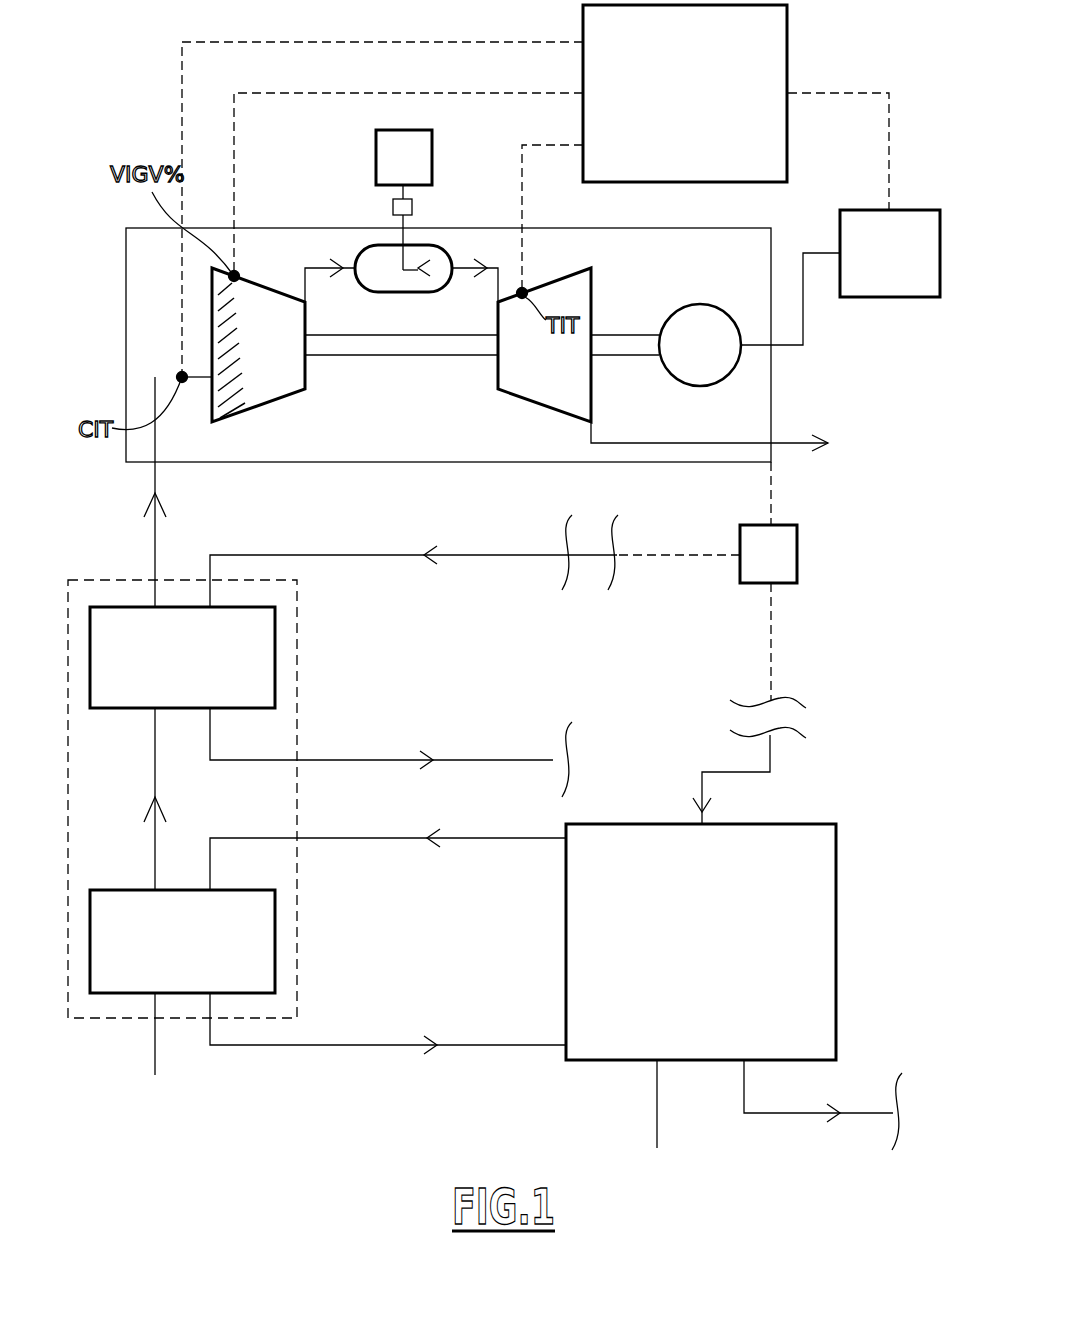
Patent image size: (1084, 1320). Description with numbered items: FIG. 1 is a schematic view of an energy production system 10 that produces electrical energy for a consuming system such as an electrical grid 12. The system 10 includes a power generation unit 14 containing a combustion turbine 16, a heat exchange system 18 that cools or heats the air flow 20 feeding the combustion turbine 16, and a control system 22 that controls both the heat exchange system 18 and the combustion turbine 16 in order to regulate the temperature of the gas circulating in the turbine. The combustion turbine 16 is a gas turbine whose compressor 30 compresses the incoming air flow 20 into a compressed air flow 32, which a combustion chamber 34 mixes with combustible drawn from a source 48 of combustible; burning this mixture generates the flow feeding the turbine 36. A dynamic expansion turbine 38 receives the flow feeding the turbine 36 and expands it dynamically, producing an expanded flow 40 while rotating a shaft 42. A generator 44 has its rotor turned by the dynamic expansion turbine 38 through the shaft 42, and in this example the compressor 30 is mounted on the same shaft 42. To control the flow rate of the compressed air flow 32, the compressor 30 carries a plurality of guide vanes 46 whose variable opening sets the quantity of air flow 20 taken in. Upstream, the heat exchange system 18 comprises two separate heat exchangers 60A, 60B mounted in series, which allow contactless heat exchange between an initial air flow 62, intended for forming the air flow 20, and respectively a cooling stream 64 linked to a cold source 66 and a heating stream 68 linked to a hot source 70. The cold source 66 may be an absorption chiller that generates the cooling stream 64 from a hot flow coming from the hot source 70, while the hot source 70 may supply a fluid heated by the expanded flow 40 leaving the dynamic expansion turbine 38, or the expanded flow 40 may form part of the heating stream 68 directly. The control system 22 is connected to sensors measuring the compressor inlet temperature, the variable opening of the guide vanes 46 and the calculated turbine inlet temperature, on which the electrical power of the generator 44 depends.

The energy production system 10 is at (183, 1137).
The electrical grid 12 is at (877, 269).
The power generation unit 14 is at (117, 360).
The combustion turbine 16 is at (158, 290).
The heat exchange system 18 is at (297, 663).
The air flow 20 is at (154, 540).
The control system 22 is at (672, 110).
The compressor 30 is at (393, 207).
The compressed air flow 32 is at (303, 277).
The combustion chamber 34 is at (405, 292).
The flow feeding the turbine 36 is at (505, 285).
The dynamic expansion turbine 38 is at (593, 278).
The expanded flow 40 is at (623, 462).
The shaft 42 is at (398, 348).
The generator 44 is at (722, 368).
The guide vanes 46 is at (228, 420).
The source of combustible 48 is at (391, 174).
The heat exchanger 60A is at (162, 671).
The heat exchanger 60B is at (162, 955).
The initial air flow 62 is at (154, 1062).
The cooling stream 64 is at (385, 840).
The cold source 66 is at (688, 958).
The heating stream 68 is at (497, 558).
The hot source 70 is at (797, 553).